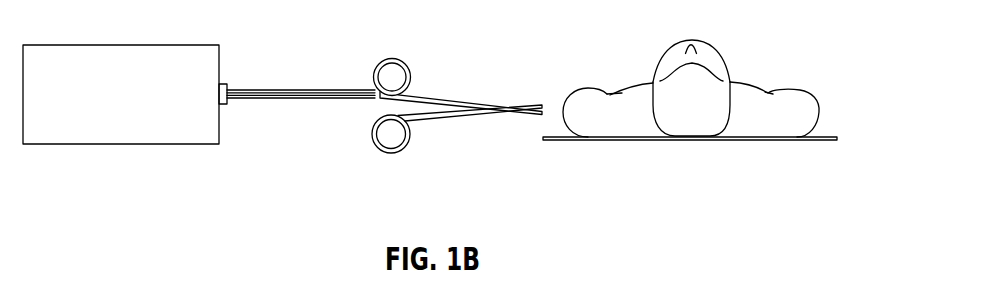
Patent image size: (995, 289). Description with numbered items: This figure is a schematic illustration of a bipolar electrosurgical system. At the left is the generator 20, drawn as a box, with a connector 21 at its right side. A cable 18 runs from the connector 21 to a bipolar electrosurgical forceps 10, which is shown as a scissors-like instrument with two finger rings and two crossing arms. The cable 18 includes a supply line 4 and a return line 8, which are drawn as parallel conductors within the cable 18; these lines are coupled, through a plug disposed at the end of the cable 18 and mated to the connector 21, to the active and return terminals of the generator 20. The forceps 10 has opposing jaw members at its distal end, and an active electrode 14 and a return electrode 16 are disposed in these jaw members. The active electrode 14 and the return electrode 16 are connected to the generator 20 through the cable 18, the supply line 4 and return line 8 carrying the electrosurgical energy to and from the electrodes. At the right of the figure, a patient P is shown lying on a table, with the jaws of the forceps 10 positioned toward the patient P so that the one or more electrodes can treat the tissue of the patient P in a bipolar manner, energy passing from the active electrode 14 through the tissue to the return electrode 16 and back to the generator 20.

The generator 20 is at (87, 44).
The connector 21 is at (222, 82).
The return line 8 is at (301, 94).
The supply line 4 is at (266, 98).
The cable 18 is at (301, 93).
The bipolar electrosurgical forceps 10 is at (491, 111).
The active electrode 14 is at (533, 108).
The return electrode 16 is at (533, 108).
The patient P is at (757, 67).